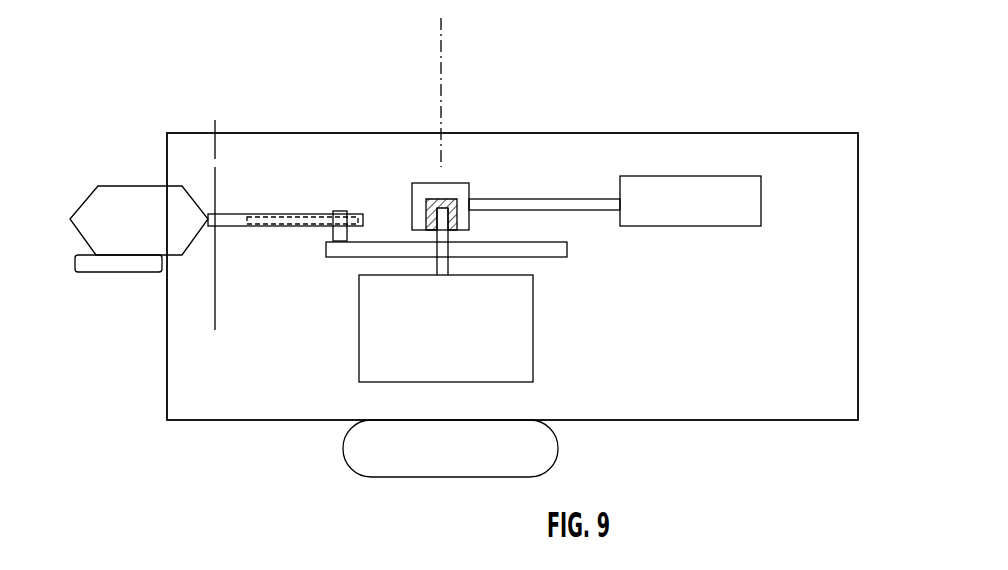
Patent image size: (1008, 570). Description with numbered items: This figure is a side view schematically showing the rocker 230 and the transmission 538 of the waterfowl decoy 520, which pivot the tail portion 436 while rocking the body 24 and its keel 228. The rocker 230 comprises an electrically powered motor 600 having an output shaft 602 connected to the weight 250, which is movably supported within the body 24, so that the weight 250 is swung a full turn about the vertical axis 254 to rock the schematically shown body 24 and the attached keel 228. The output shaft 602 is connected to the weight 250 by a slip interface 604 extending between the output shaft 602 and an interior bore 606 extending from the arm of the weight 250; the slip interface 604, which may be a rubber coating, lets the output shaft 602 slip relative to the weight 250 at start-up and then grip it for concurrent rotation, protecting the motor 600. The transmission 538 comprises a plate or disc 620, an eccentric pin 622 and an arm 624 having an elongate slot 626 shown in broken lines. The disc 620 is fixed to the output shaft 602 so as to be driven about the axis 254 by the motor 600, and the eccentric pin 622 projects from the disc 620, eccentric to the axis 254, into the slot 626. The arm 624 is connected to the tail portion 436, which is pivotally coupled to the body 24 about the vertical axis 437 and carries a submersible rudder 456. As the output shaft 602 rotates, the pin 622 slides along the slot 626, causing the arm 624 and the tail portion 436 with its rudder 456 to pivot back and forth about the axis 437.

The waterfowl decoy 520 is at (143, 88).
The body 24 is at (655, 421).
The keel 228 is at (477, 478).
The vertical axis 254 is at (441, 53).
The axis 437 is at (215, 147).
The tail portion 436 is at (112, 186).
The submersible rudder 456 is at (88, 272).
The arm 624 is at (233, 227).
The elongate slot 626 is at (280, 213).
The transmission 538 is at (323, 198).
The eccentric pin 622 is at (340, 211).
The disc 620 is at (567, 250).
The slip interface 604 is at (457, 190).
The interior bore 606 is at (427, 213).
The output shaft 602 is at (447, 265).
The motor 600 is at (533, 350).
The rocker 230 is at (566, 174).
The weight 250 is at (722, 176).